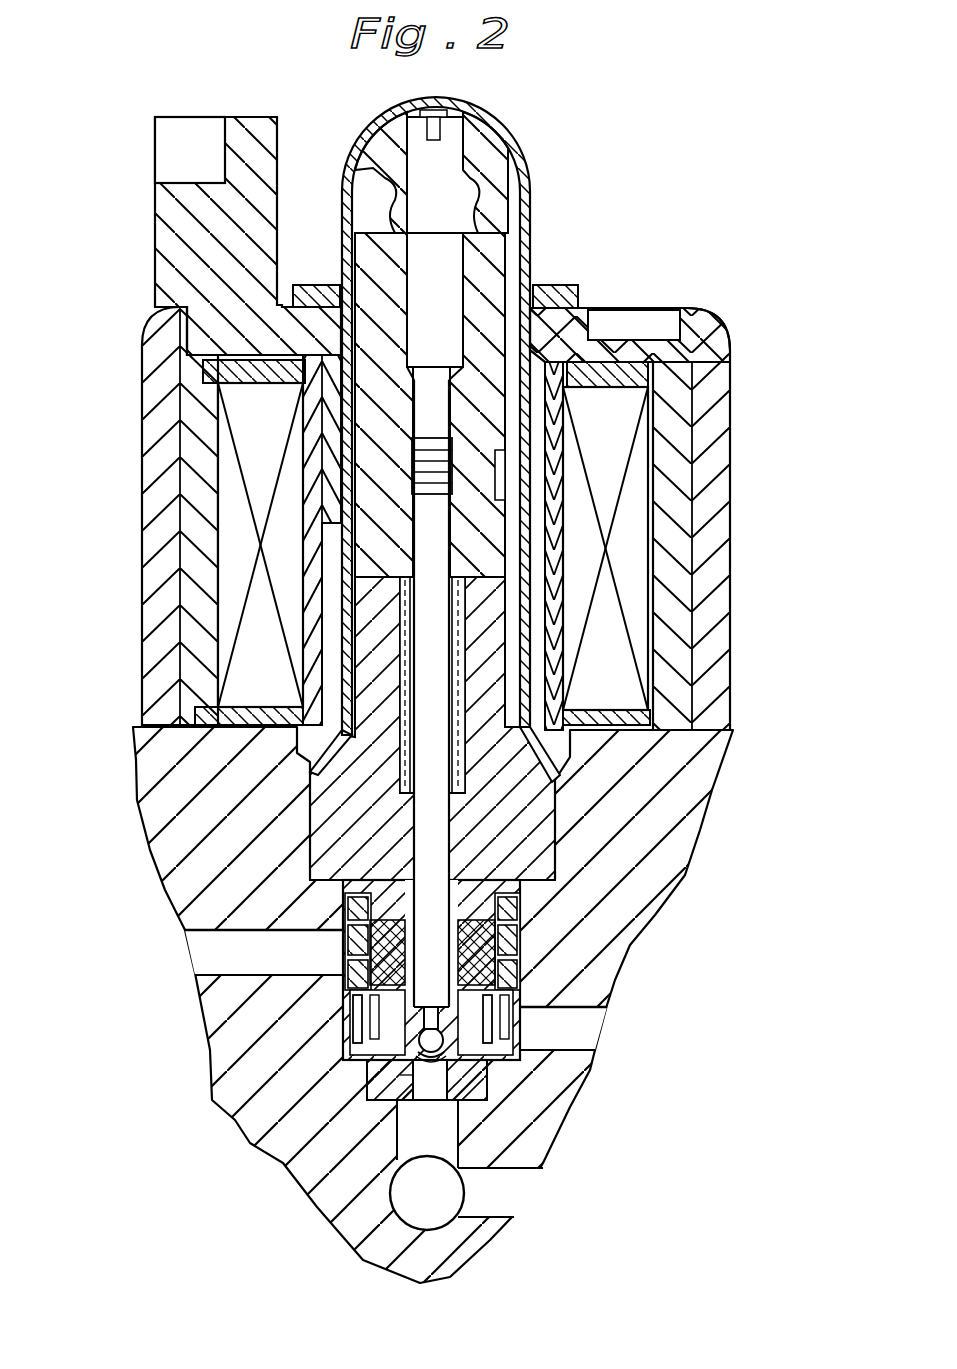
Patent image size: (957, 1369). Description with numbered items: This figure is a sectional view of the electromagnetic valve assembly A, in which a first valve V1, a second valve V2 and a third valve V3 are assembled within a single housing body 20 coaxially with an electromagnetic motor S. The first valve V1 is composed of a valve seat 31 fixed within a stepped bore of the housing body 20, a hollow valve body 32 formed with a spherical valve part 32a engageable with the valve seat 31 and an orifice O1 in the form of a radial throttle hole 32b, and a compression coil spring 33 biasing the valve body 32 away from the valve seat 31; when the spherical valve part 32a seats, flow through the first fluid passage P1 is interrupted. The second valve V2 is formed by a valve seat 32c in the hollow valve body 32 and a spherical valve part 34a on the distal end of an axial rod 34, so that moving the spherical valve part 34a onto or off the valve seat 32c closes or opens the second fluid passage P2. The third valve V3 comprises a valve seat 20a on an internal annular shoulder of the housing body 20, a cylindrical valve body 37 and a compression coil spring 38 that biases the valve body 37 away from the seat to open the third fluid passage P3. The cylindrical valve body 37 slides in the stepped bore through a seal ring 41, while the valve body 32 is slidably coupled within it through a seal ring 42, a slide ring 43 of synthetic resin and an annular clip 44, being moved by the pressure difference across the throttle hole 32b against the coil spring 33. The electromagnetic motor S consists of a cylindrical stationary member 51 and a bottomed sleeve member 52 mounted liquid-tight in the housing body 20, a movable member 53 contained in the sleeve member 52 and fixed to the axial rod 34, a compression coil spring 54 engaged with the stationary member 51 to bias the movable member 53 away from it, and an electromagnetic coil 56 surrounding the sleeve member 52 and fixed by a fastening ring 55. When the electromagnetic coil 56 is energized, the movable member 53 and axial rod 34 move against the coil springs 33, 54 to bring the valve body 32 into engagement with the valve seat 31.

The housing body 20 is at (683, 824).
The valve seat 20a is at (540, 1000).
The valve seat 31 is at (489, 1124).
The hollow valve body 32 is at (473, 880).
The spherical valve part 32a is at (427, 1134).
The radial throttle hole 32b is at (605, 1037).
The valve seat 32c is at (520, 956).
The compression coil spring 33 is at (470, 1062).
The axial rod 34 is at (449, 829).
The spherical valve part 34a is at (350, 1070).
The cylindrical valve body 37 is at (545, 916).
The compression coil spring 38 is at (345, 1044).
The seal ring 41 is at (345, 914).
The seal ring 42 is at (345, 946).
The slide ring 43 is at (345, 986).
The annular clip 44 is at (520, 936).
The cylindrical stationary member 51 is at (553, 822).
The bottomed sleeve member 52 is at (530, 150).
The movable member 53 is at (500, 258).
The compression coil spring 54 is at (400, 790).
The fastening ring 55 is at (310, 291).
The electromagnetic coil 56 is at (640, 511).
The solenoid actuator A is at (737, 665).
The electromagnetic motor S is at (586, 296).
The orifice O1 is at (554, 1046).
The first fluid passage P1 is at (511, 1196).
The second fluid passage P2 is at (410, 1076).
The third fluid passage P3 is at (190, 951).
The first valve V1 is at (400, 1118).
The second valve V2 is at (400, 1062).
The third valve V3 is at (545, 994).